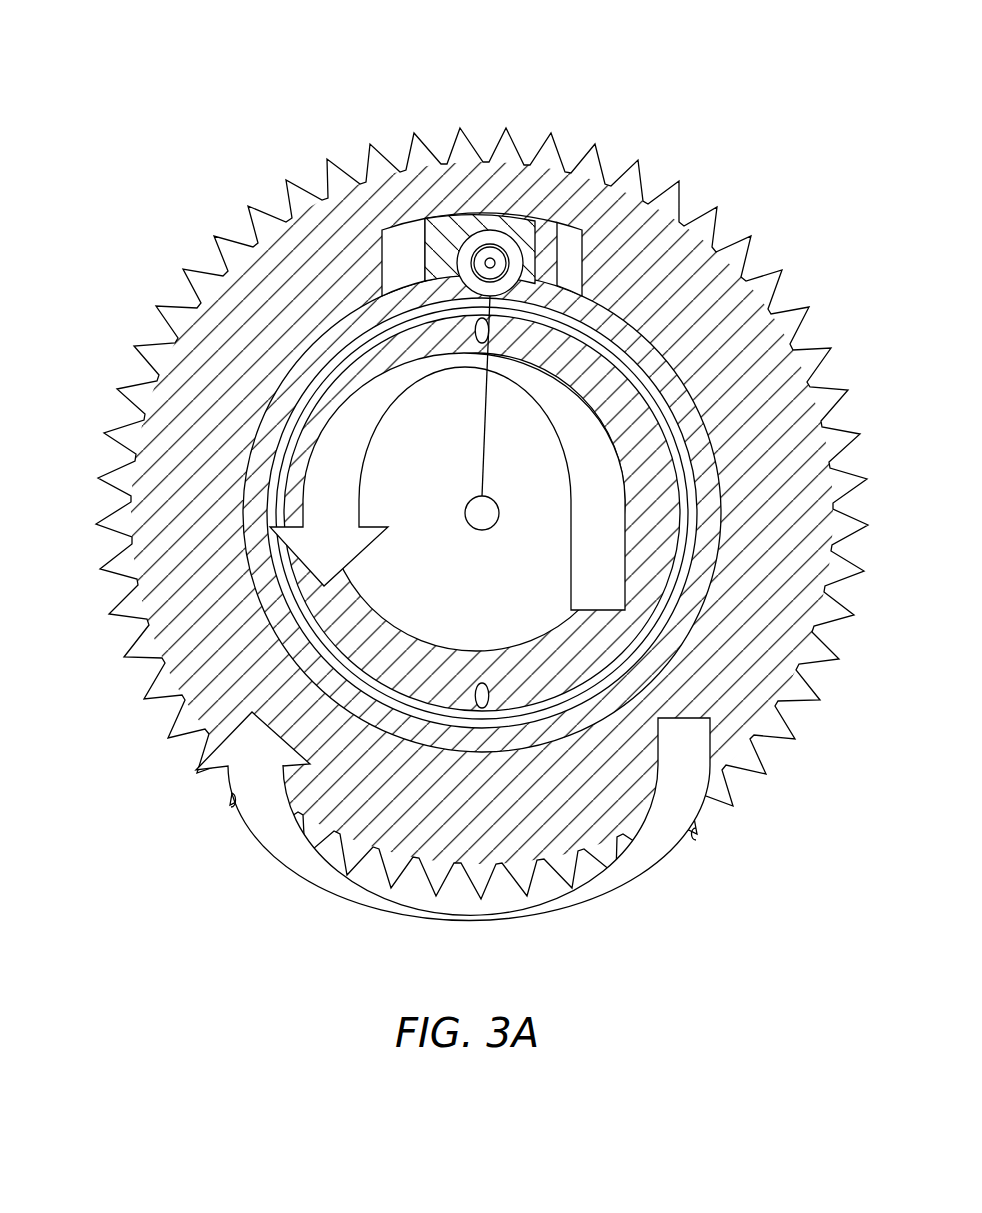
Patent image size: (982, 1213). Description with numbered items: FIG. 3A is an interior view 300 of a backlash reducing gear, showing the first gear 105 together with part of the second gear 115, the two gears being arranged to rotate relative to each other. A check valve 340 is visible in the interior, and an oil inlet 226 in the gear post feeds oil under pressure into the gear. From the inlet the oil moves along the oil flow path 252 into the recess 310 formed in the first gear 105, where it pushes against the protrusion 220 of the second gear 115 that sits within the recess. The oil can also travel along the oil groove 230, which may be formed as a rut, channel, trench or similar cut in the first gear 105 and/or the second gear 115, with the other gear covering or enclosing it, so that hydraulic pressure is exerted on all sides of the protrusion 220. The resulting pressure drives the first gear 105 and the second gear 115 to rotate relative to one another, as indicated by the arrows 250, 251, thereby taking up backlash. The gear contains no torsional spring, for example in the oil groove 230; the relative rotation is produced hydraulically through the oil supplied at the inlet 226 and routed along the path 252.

The first gear 105 is at (312, 268).
The second gear 115 is at (250, 522).
The protrusion 220 is at (532, 286).
The oil inlet 226 is at (486, 530).
The oil groove 230 is at (292, 616).
The arrow 250 is at (704, 766).
The arrow 251 is at (353, 491).
The oil flow path 252 is at (527, 263).
The interior view 300 is at (268, 126).
The recess 310 is at (402, 240).
The check valve 340 is at (490, 262).